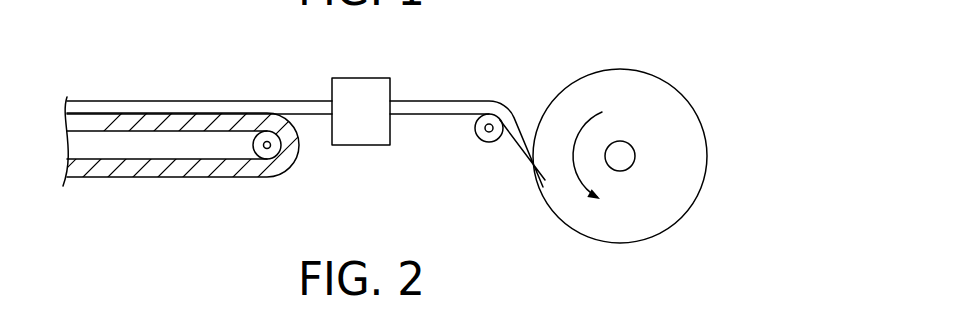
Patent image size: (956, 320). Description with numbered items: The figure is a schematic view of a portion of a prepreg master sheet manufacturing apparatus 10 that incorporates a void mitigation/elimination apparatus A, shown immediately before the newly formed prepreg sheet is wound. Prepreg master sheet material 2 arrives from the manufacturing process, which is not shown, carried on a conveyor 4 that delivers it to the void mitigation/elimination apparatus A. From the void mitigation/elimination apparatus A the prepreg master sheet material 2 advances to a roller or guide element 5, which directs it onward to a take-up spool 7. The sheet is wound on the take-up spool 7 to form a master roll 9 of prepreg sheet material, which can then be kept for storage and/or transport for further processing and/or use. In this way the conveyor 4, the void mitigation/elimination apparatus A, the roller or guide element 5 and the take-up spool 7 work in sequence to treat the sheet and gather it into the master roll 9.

The prepreg master sheet manufacturing apparatus 10 is at (470, 68).
The prepreg master sheet material 2 is at (242, 101).
The conveyor 4 is at (181, 178).
The roller or guide element 5 is at (488, 143).
The take-up spool 7 is at (635, 157).
The master roll 9 is at (648, 213).
The void mitigation/elimination apparatus A is at (361, 111).